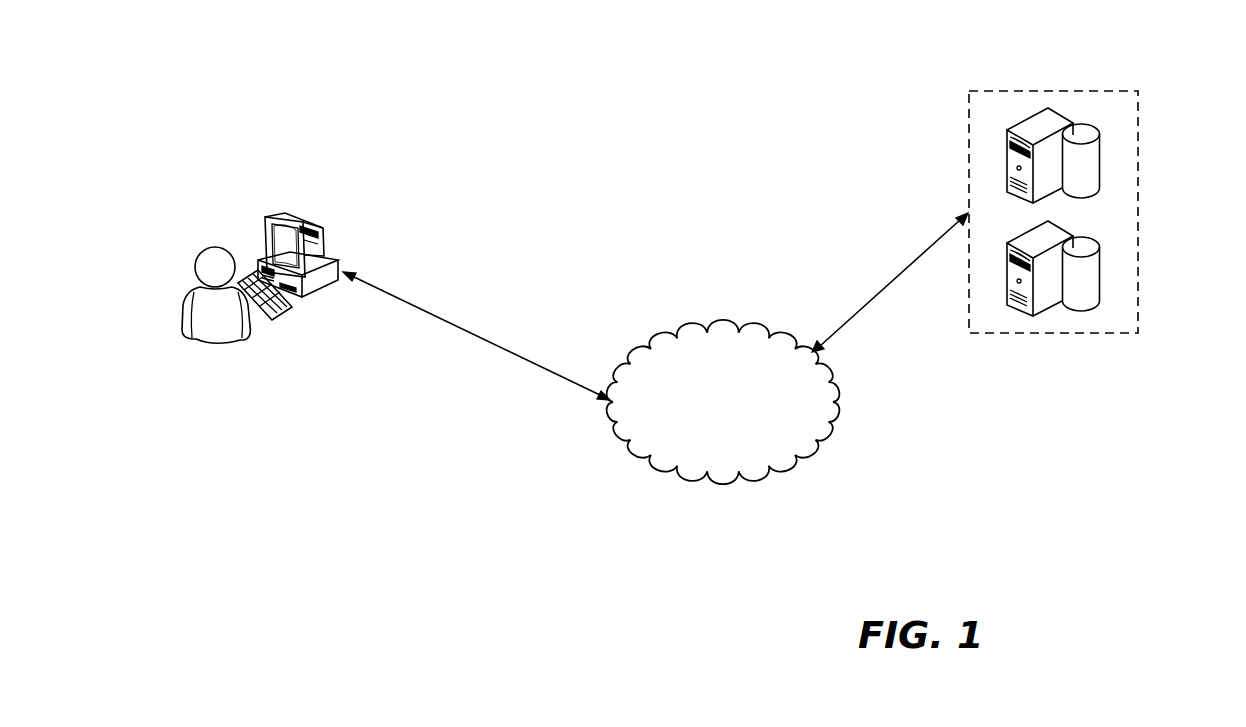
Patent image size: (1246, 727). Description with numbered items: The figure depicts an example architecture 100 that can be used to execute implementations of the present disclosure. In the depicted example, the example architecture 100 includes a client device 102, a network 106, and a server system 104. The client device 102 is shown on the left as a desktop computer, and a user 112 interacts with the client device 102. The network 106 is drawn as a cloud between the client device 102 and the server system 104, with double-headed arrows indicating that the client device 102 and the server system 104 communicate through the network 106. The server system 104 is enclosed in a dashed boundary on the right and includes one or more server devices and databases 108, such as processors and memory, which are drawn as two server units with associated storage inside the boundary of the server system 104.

The example architecture 100 is at (575, 90).
The client device 102 is at (263, 221).
The server system 104 is at (1138, 213).
The network 106 is at (723, 328).
The server devices and databases 108 is at (1006, 155).
The user 112 is at (215, 343).